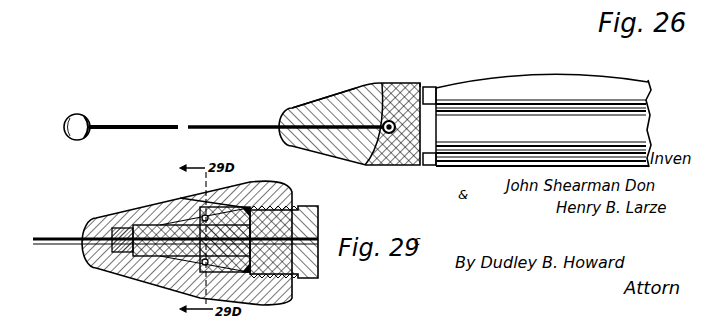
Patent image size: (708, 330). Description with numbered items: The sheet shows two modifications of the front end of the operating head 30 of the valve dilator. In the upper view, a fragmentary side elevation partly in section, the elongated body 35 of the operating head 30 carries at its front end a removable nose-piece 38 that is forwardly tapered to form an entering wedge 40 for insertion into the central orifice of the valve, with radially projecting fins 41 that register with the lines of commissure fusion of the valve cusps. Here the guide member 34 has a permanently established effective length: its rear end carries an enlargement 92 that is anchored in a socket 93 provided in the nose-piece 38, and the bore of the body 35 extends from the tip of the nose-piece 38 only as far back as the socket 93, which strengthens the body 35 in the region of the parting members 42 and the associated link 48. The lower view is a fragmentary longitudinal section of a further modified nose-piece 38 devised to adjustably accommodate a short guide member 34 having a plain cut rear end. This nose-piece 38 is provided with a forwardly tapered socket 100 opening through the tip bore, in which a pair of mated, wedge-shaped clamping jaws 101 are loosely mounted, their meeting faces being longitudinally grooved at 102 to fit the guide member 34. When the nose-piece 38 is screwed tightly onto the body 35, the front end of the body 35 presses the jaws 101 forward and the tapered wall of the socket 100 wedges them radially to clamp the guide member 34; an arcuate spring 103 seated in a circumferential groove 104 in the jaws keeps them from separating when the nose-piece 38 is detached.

In FIG. 26, the operating head 30 is at (516, 72).
In FIG. 26, the guide member 34 is at (244, 120).
In FIG. 29C, the guide member 34 is at (50, 248).
In FIG. 26, the elongated body 35 is at (486, 38).
In FIG. 26, the nose-piece 38 is at (347, 88).
In FIG. 29C, the nose-piece 38 is at (153, 204).
In FIG. 26, the entering wedge 40 is at (298, 97).
In FIG. 26, the fins 41 is at (424, 86).
In FIG. 26, the parting members 42 is at (478, 78).
In FIG. 26, the link 48 is at (326, 2).
In FIG. 26, the enlargement 92 is at (368, 166).
In FIG. 26, the socket 93 is at (389, 119).
In FIG. 29C, the forwardly tapered socket 100 is at (128, 262).
In FIG. 29C, the clamping jaw 101 is at (170, 262).
In FIG. 29C, the longitudinal groove 102 is at (318, 268).
In FIG. 29C, the arcuate spring 103 is at (210, 206).
In FIG. 29C, the circumferential groove 104 is at (201, 216).